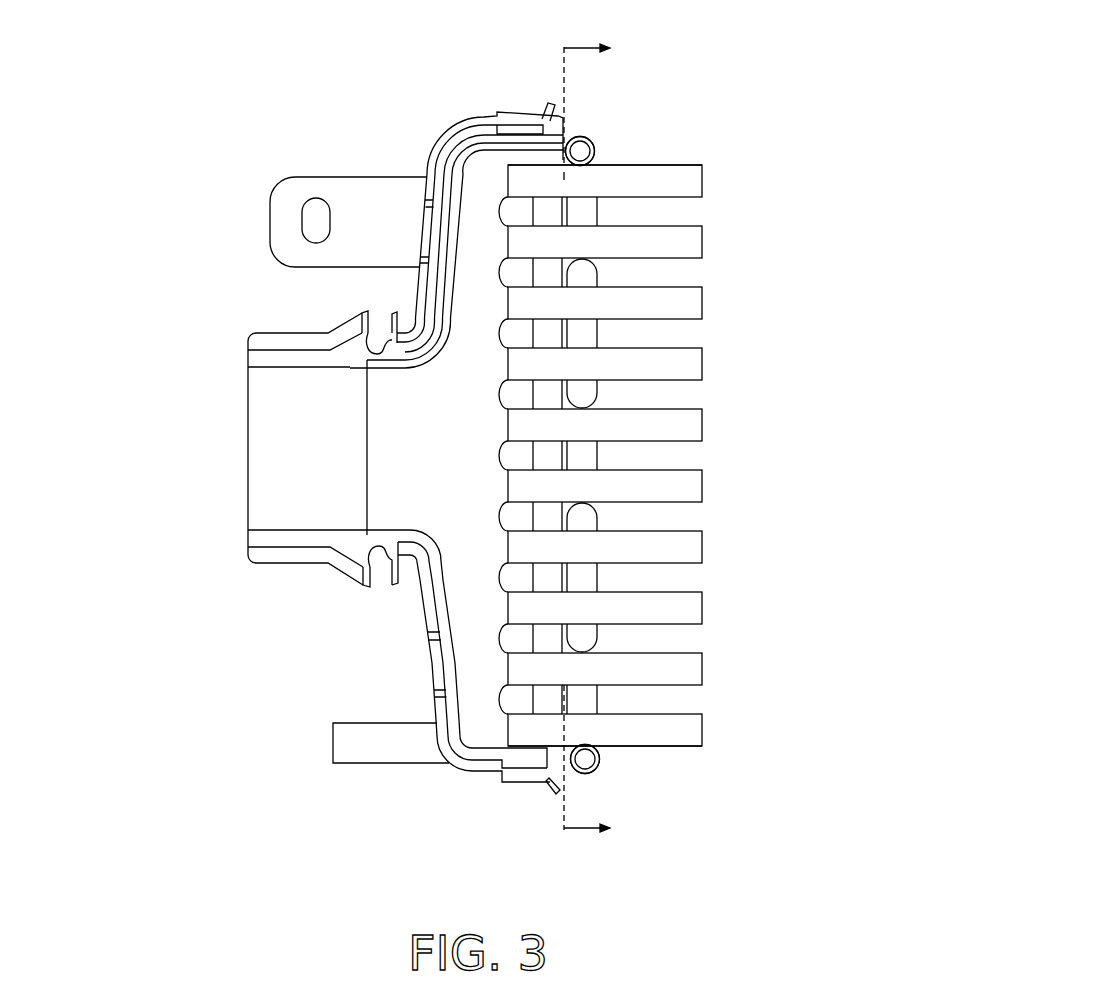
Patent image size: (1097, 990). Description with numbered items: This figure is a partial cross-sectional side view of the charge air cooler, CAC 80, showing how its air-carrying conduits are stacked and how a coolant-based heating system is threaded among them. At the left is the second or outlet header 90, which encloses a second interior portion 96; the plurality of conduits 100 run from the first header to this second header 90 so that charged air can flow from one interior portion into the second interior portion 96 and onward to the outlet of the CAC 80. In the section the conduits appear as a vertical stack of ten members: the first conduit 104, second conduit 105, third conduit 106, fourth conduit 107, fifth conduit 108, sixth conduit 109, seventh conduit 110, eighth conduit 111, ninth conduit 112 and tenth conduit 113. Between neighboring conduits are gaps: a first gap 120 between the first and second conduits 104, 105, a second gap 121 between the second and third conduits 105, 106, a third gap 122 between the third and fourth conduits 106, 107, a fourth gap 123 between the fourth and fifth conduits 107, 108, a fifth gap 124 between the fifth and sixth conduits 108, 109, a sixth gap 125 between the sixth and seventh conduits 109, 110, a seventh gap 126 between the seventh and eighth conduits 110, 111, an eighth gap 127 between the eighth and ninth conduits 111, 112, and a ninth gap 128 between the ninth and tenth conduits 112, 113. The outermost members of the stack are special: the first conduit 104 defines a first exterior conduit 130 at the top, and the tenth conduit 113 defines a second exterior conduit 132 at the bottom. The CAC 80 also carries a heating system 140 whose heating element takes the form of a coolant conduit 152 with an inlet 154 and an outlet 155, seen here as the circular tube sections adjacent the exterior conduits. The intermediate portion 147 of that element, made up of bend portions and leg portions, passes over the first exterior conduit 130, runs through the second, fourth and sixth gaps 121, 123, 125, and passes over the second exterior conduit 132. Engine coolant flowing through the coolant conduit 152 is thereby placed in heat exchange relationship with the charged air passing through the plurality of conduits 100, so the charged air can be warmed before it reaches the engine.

The CAC 80 is at (177, 342).
The second or outlet header 90 is at (435, 220).
The second interior portion 96 is at (488, 440).
The plurality of conduits 100 is at (718, 162).
The first conduit 104 is at (688, 186).
The second conduit 105 is at (688, 247).
The third conduit 106 is at (688, 308).
The fourth conduit 107 is at (688, 369).
The fifth conduit 108 is at (688, 430).
The sixth conduit 109 is at (688, 491).
The seventh conduit 110 is at (688, 552).
The eighth conduit 111 is at (688, 613).
The ninth conduit 112 is at (688, 674).
The tenth conduit 113 is at (688, 735).
The first gap 120 is at (685, 213).
The second gap 121 is at (685, 274).
The third gap 122 is at (685, 335).
The fourth gap 123 is at (685, 396).
The fifth gap 124 is at (685, 457).
The sixth gap 125 is at (685, 518).
The seventh gap 126 is at (685, 579).
The eighth gap 127 is at (685, 640).
The ninth gap 128 is at (685, 701).
The first exterior conduit 130 is at (644, 164).
The second exterior conduit 132 is at (630, 747).
The heating system 140 is at (600, 134).
The intermediate portion 147 is at (578, 603).
The coolant conduit 152 is at (587, 766).
The inlet 154 is at (597, 766).
The outlet 155 is at (592, 138).